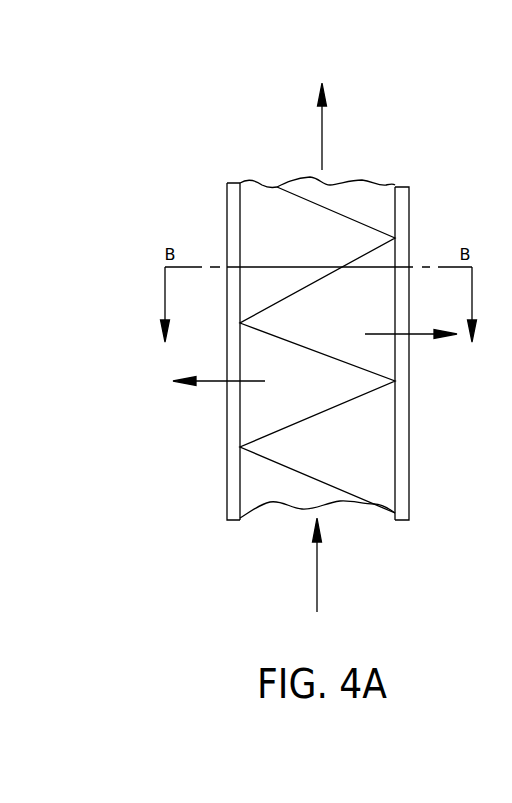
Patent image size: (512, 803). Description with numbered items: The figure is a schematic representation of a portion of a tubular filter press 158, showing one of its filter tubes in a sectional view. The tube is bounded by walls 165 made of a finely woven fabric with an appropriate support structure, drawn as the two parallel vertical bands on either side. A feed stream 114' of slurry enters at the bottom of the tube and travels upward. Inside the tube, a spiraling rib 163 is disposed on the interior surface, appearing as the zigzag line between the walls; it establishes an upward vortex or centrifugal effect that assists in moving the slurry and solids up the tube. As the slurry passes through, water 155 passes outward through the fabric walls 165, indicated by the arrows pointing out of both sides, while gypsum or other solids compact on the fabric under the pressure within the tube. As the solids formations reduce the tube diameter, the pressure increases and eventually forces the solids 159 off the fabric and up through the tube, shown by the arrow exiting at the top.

The filter press 158 is at (200, 197).
The walls 165 is at (233, 480).
The spiraling rib 163 is at (337, 407).
The solids 159 is at (322, 113).
The feed stream 114' is at (319, 579).
The water 155 is at (297, 361).